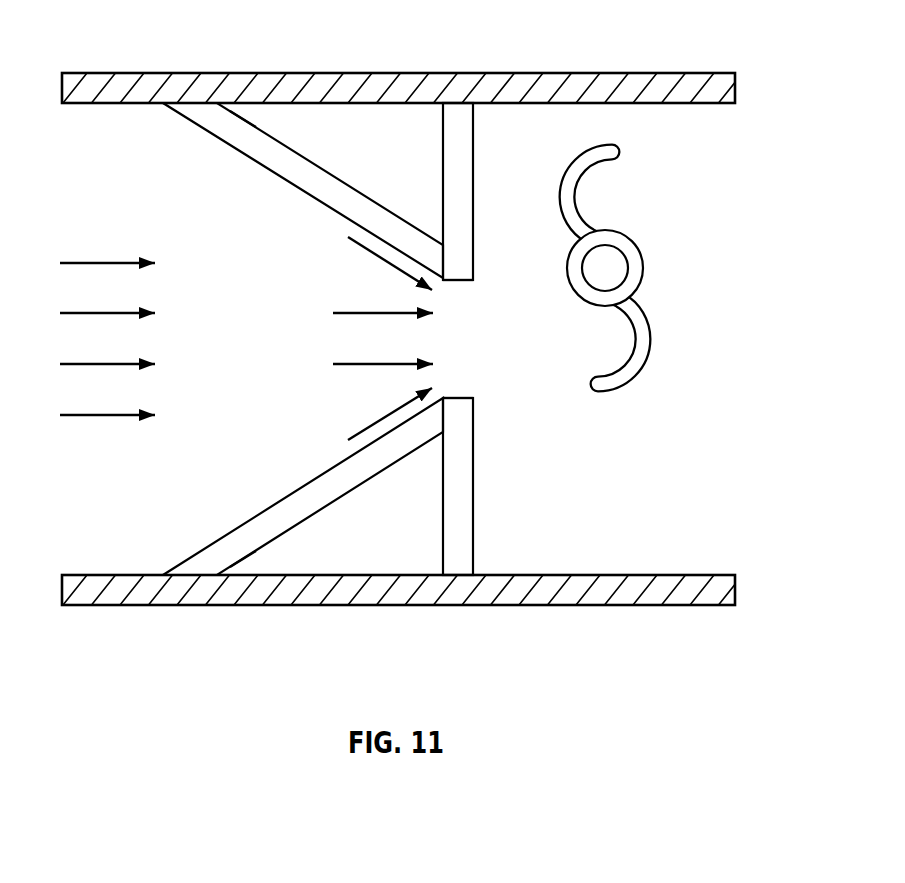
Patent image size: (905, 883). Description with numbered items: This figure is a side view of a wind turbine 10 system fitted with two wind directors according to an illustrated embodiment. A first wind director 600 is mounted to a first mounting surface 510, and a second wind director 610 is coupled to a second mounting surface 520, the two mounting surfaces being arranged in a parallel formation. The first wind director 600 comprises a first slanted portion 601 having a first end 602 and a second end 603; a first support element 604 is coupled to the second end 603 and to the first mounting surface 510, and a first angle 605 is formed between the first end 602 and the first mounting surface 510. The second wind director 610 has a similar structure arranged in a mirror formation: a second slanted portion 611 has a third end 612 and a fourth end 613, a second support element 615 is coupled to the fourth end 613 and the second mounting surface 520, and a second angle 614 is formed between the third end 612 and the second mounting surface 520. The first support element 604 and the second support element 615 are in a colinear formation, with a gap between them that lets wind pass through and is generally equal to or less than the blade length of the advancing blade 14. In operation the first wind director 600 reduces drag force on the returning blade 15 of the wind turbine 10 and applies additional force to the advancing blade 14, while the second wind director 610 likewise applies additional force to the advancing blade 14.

The wind turbine 10 is at (659, 259).
The advancing blade 14 is at (608, 341).
The returning blade 15 is at (607, 193).
The first mounting surface 510 is at (385, 73).
The second mounting surface 520 is at (385, 606).
The first wind director 600 is at (335, 168).
The first slanted portion 601 is at (298, 189).
The first end 602 is at (165, 106).
The second end 603 is at (443, 282).
The first support element 604 is at (457, 203).
The first angle 605 is at (243, 117).
The second wind director 610 is at (329, 506).
The second slanted portion 611 is at (300, 487).
The third end 612 is at (163, 572).
The fourth end 613 is at (443, 396).
The second angle 614 is at (246, 560).
The second support element 615 is at (457, 472).